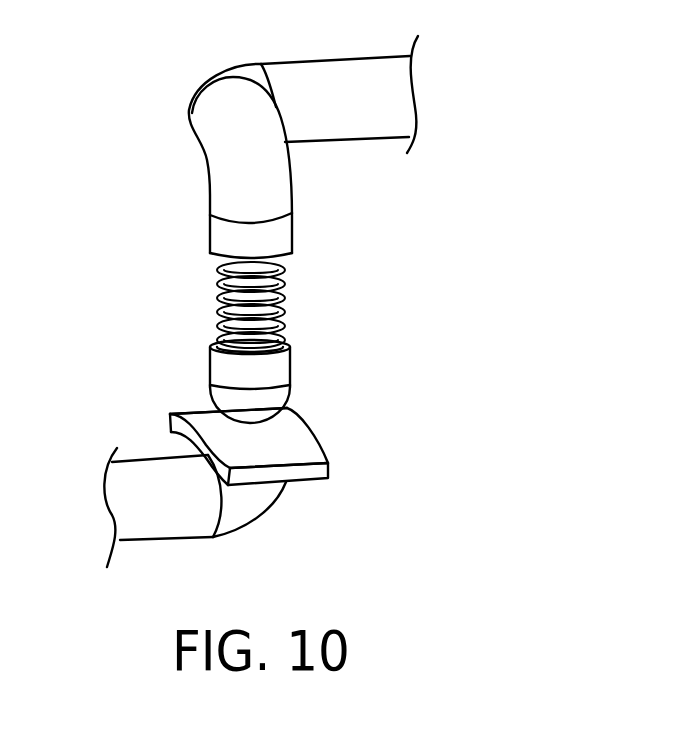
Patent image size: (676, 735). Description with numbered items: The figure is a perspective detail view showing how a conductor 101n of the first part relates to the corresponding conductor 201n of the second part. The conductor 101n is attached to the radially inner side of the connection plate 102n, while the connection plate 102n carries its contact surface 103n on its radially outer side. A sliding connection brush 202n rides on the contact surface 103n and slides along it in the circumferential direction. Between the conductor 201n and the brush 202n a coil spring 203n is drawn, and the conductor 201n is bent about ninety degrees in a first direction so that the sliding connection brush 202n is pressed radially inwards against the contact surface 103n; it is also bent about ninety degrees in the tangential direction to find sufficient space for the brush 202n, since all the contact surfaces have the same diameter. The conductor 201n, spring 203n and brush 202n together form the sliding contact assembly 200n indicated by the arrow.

The damper unit 200n is at (349, 376).
The conductor 201n is at (345, 93).
The coil spring 203n is at (217, 305).
The sliding connection brush 202n is at (240, 372).
The connection plate 102n is at (175, 420).
The contact surface 103n is at (280, 443).
The conductor 101n is at (162, 502).